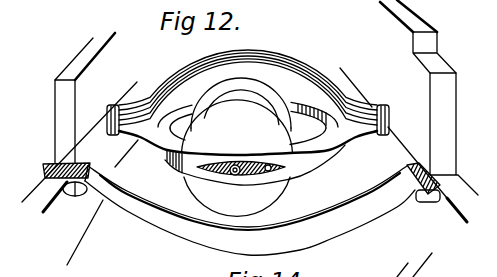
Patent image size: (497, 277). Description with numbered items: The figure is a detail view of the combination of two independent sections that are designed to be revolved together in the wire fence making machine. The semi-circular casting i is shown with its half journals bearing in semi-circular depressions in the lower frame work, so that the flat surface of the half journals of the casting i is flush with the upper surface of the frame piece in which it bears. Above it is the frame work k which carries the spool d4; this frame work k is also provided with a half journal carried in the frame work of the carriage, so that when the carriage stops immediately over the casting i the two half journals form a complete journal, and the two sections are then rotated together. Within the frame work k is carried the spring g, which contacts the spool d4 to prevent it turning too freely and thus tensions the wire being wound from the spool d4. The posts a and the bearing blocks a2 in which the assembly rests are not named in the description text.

The post a is at (266, 124).
The bearing block a2 is at (248, 191).
The semi-circular casting i is at (282, 63).
The frame work k is at (307, 168).
The spool d4 is at (237, 147).
The spring g is at (268, 171).